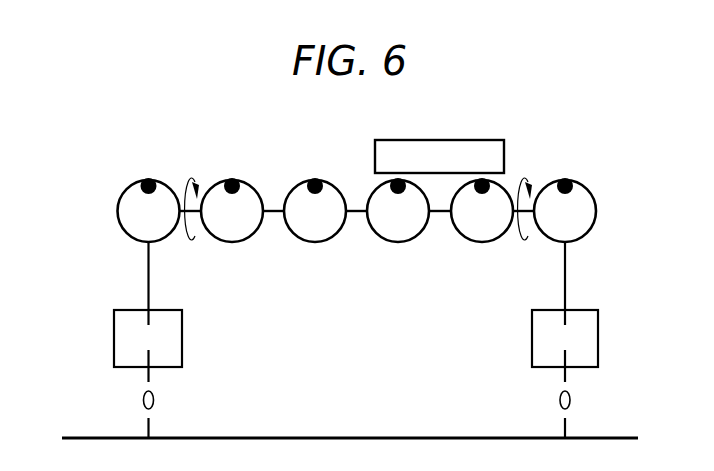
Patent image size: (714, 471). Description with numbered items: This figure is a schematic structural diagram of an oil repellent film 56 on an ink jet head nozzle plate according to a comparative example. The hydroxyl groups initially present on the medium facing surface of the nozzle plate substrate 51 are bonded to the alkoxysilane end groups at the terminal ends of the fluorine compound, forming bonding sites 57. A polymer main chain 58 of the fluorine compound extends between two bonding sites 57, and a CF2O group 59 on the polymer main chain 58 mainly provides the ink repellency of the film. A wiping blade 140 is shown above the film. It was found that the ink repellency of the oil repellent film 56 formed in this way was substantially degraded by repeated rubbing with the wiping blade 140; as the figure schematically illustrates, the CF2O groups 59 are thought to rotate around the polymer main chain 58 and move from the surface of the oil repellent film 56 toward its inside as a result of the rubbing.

The nozzle plate substrate 51 is at (617, 451).
The oil repellent film 56 is at (88, 182).
The bonding site 57 is at (585, 340).
The polymer main chain 58 is at (298, 187).
The CF2O group 59 is at (230, 181).
The wiping blade 140 is at (441, 150).